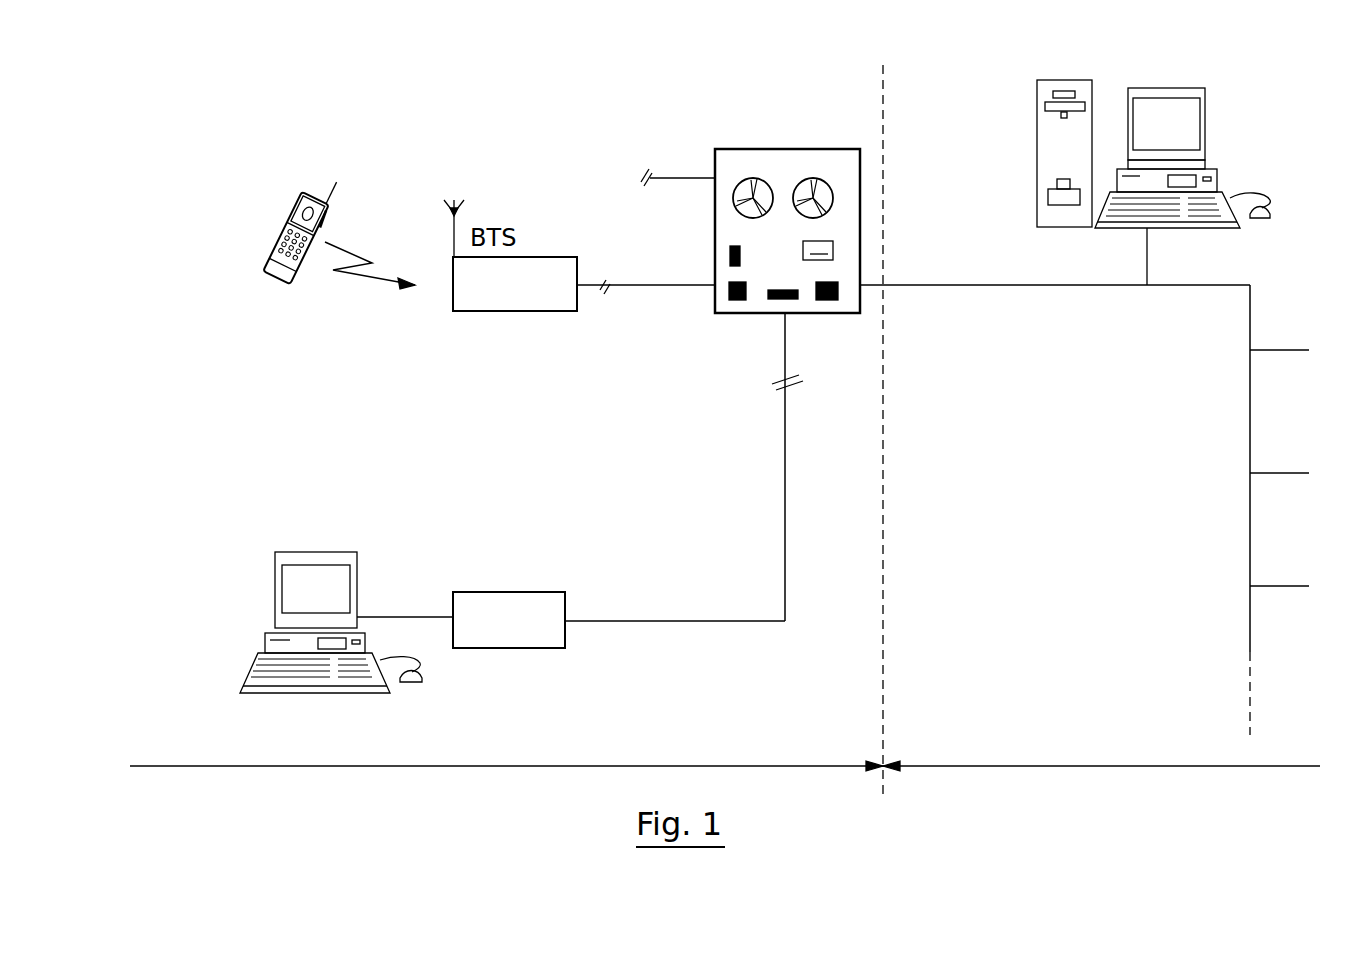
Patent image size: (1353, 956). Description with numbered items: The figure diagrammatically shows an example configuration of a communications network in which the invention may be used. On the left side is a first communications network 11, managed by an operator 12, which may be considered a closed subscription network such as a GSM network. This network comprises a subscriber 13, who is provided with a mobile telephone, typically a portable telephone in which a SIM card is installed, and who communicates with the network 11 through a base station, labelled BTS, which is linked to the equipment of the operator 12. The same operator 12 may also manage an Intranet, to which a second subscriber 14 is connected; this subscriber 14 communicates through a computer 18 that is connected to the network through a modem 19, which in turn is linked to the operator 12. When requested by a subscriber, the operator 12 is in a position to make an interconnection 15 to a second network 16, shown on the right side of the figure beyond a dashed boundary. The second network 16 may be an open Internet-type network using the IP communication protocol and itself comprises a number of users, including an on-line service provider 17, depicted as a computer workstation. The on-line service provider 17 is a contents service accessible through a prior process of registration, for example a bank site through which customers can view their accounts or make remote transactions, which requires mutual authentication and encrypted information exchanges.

The first communications network 11 is at (646, 268).
The operator 12 is at (787, 160).
The subscriber 13 is at (280, 225).
The second subscriber 14 is at (291, 558).
The interconnection 15 is at (988, 284).
The second network 16 is at (725, 752).
The on-line service provider 17 is at (1205, 117).
The computer 18 is at (275, 590).
The modem 19 is at (517, 597).